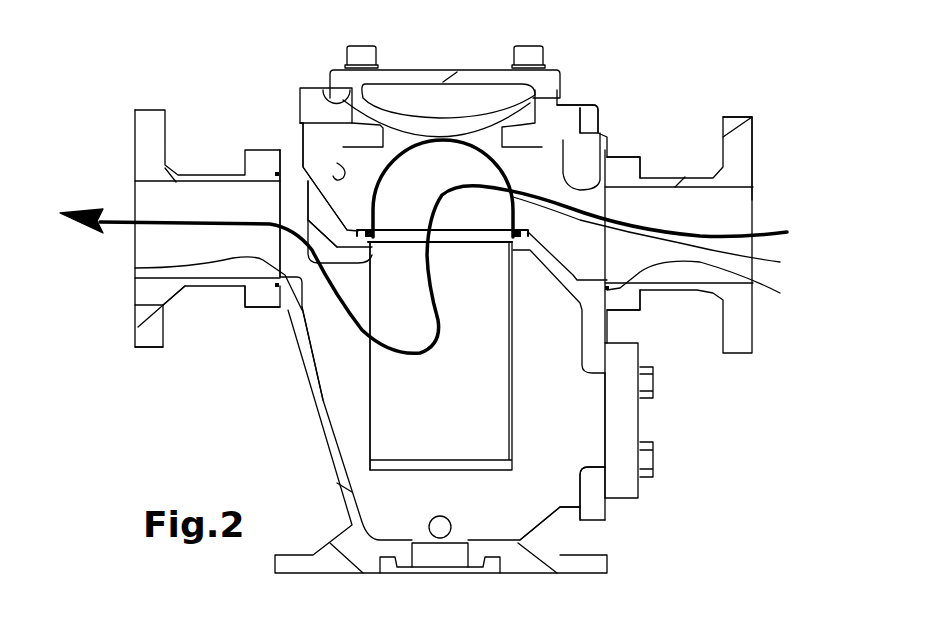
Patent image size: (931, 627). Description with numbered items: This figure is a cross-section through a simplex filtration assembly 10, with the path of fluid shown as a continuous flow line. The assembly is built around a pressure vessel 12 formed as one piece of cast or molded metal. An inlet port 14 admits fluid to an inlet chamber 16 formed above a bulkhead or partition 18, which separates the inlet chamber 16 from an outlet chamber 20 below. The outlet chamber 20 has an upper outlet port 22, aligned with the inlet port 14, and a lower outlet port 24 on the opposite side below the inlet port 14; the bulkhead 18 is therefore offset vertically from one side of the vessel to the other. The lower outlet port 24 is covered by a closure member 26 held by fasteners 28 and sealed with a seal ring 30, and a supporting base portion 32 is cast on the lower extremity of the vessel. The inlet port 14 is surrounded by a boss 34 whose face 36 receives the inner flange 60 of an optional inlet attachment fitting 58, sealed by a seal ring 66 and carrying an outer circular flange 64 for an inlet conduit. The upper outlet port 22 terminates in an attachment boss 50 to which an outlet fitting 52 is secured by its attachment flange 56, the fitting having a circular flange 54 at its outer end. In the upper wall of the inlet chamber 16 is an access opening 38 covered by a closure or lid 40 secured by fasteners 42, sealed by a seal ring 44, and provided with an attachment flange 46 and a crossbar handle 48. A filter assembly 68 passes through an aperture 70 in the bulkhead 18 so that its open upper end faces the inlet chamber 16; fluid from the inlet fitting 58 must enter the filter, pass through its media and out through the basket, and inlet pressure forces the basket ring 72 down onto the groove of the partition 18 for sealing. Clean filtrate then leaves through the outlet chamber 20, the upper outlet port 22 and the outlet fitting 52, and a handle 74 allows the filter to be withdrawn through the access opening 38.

The filtration assembly 10 is at (235, 420).
The pressure vessel 12 is at (312, 412).
The inlet port 14 is at (566, 152).
The inlet chamber 16 is at (337, 163).
The bulkhead or partition 18 is at (310, 218).
The outlet chamber 20 is at (560, 507).
The upper outlet port 22 is at (135, 268).
The lower outlet port 24 is at (605, 445).
The closure member 26 is at (640, 487).
The fasteners 28 is at (655, 383).
The seal ring 30 is at (603, 473).
The supporting base portion 32 is at (330, 572).
The boss 34 is at (603, 137).
The face 36 is at (607, 332).
The access opening 38 is at (520, 120).
The closure or lid 40 is at (423, 270).
The fasteners 42 is at (357, 46).
The seal ring 44 is at (327, 90).
The attachment flange 46 is at (330, 72).
The crossbar handle 48 is at (420, 70).
The attachment boss 50 is at (285, 148).
The outlet fitting 52 is at (192, 142).
The circular flange 54 is at (147, 348).
The attachment flange 56 is at (240, 302).
The inlet attachment fitting 58 is at (683, 160).
The inner flange 60 is at (630, 155).
The outer circular flange 64 is at (737, 117).
The seal ring 66 is at (708, 284).
The filter assembly 68 is at (367, 423).
The aperture 70 is at (373, 267).
The basket ring 72 is at (370, 356).
The handle 74 is at (660, 238).